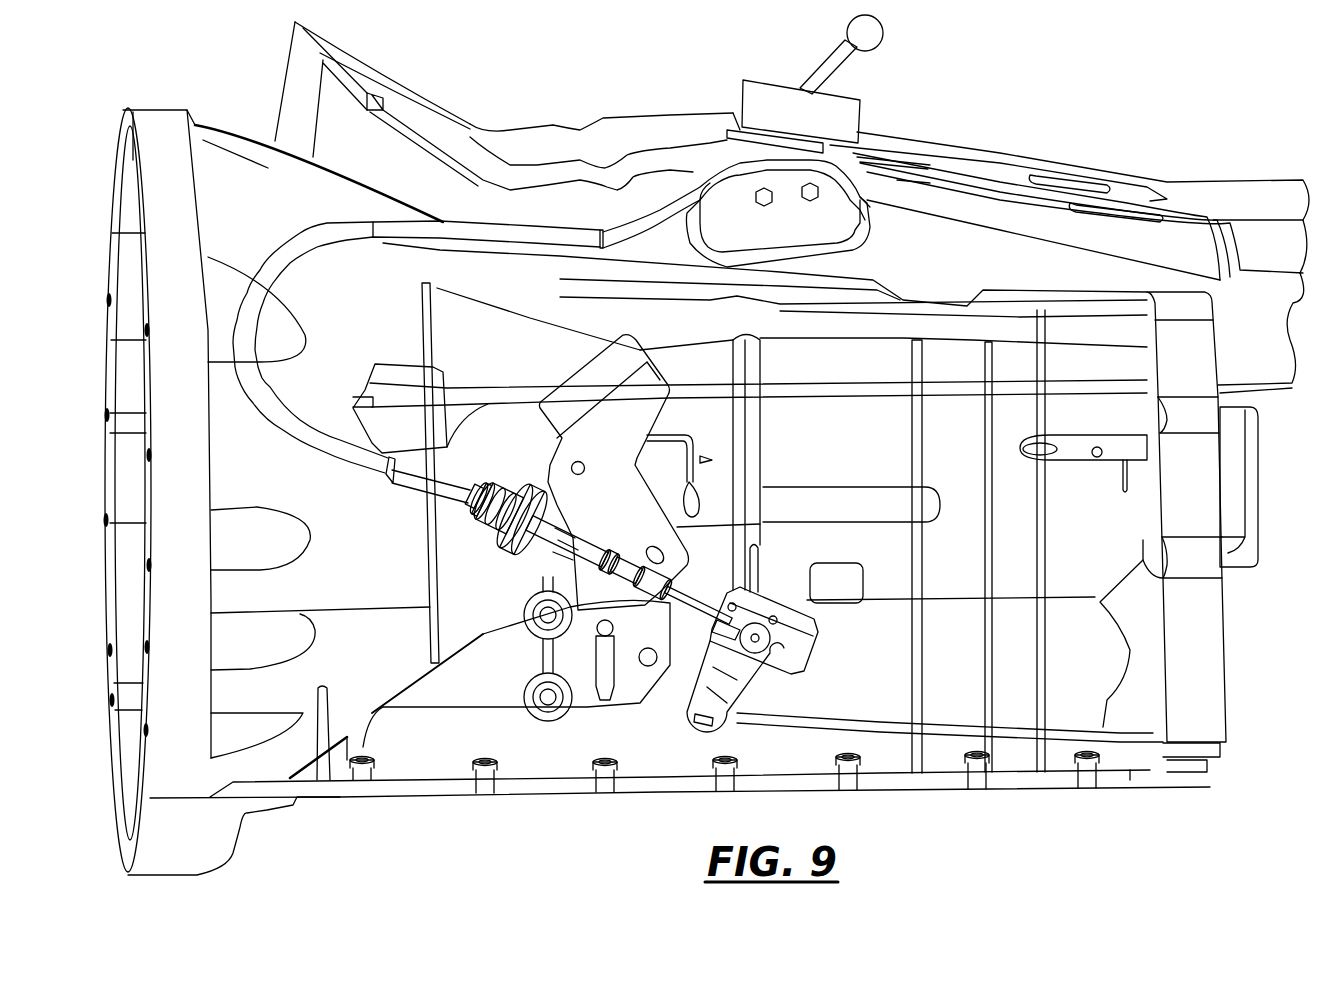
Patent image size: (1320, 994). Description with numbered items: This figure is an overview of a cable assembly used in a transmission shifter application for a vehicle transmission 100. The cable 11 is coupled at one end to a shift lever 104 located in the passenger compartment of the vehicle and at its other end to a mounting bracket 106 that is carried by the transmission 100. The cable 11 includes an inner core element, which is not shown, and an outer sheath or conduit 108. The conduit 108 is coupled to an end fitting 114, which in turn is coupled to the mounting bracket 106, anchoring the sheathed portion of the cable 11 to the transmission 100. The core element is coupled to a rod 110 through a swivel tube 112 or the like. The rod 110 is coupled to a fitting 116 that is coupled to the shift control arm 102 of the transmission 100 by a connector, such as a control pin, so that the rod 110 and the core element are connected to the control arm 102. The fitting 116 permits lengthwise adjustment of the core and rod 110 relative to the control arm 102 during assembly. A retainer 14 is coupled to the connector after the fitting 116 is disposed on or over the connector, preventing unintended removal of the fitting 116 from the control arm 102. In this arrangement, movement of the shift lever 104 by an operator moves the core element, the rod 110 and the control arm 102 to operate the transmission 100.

The transmission 100 is at (367, 797).
The cable 11 is at (483, 210).
The conduit 108 is at (562, 230).
The shift lever 104 is at (797, 80).
The mounting bracket 106 is at (630, 504).
The end fitting 114 is at (533, 550).
The swivel tube 112 is at (621, 567).
The rod 110 is at (700, 610).
The fitting 116 is at (815, 633).
The retainer 14 is at (760, 647).
The shift control arm 102 is at (735, 697).